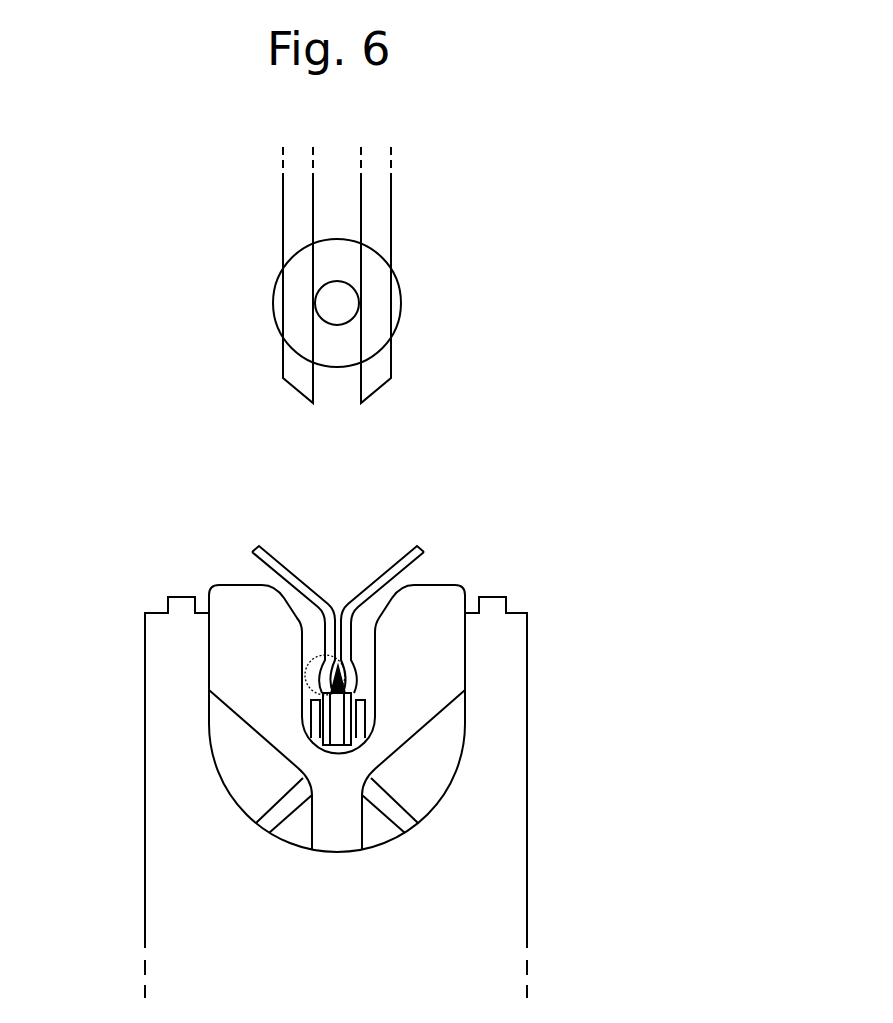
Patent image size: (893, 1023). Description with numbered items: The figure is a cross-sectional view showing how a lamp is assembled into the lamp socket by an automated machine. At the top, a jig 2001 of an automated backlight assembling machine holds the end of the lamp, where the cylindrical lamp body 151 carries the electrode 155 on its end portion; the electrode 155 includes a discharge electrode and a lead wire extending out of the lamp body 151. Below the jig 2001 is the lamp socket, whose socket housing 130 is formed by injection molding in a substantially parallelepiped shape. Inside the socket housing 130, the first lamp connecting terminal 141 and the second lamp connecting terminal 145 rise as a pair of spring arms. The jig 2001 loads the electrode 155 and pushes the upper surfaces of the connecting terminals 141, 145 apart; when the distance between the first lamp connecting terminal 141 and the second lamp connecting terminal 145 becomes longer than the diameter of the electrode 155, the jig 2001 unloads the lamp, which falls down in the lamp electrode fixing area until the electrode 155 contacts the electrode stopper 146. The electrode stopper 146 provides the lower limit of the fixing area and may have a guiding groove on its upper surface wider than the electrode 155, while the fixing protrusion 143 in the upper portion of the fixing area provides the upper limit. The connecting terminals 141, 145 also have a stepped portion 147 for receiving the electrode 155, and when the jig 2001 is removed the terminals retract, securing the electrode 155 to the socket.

The jig 2001 is at (380, 225).
The electrode portion 155 is at (343, 302).
The lamp body 151 is at (343, 345).
The first lamp connecting terminal 141 is at (265, 545).
The second lamp connecting terminal 145 is at (410, 546).
The electrode stopper 146 is at (438, 660).
The fixing protrusion 143 is at (345, 678).
The stepped portion 147 is at (306, 686).
The socket housing 130 is at (507, 822).